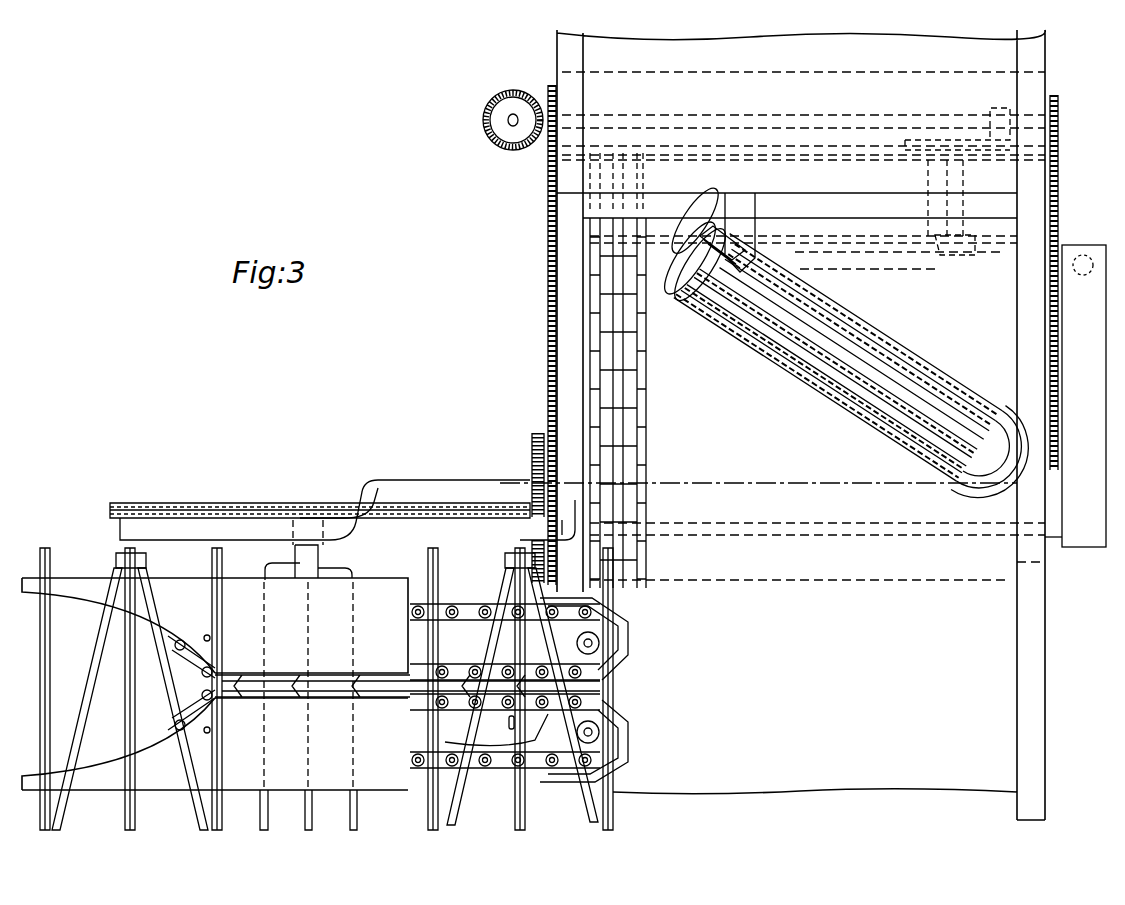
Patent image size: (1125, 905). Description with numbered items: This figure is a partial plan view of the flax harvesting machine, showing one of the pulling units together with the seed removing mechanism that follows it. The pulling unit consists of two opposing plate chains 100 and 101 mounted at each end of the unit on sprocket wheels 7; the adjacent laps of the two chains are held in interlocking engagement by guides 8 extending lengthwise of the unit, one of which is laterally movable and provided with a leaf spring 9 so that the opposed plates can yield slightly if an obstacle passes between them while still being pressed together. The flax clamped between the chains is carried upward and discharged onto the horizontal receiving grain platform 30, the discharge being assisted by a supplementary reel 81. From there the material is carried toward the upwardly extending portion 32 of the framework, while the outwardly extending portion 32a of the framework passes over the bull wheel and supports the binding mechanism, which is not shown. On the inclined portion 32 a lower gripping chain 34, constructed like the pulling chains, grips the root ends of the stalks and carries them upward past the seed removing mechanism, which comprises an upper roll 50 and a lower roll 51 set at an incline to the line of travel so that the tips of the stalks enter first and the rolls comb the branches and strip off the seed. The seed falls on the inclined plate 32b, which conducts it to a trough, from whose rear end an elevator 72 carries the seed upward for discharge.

The upwardly extending portion of the framework 32 is at (1015, 296).
The outwardly extending portion of the framework 32a is at (575, 52).
The inclined plate 32b is at (998, 357).
The lower gripping chain 34 is at (605, 318).
The upper roll 50 is at (930, 376).
The lower roll 51 is at (852, 414).
The elevator 72 is at (1093, 548).
The supplementary reel 81 is at (512, 562).
The pulling chain 101 is at (469, 608).
The pulling chain 100 is at (503, 748).
The leaf spring 9 is at (487, 768).
The guide 8 is at (458, 718).
The sprocket wheel 7 is at (600, 641).
The receiving grain platform 30 is at (40, 640).